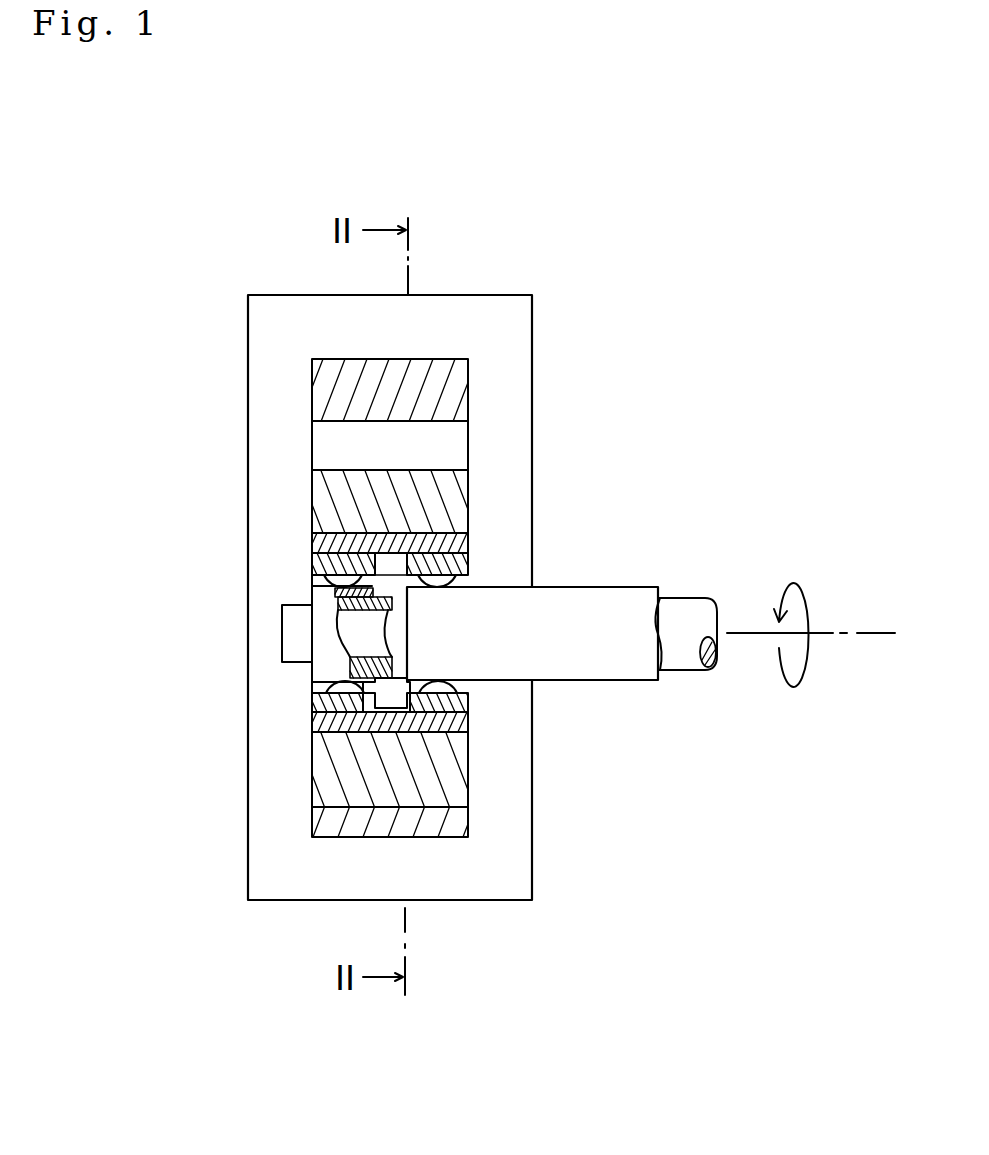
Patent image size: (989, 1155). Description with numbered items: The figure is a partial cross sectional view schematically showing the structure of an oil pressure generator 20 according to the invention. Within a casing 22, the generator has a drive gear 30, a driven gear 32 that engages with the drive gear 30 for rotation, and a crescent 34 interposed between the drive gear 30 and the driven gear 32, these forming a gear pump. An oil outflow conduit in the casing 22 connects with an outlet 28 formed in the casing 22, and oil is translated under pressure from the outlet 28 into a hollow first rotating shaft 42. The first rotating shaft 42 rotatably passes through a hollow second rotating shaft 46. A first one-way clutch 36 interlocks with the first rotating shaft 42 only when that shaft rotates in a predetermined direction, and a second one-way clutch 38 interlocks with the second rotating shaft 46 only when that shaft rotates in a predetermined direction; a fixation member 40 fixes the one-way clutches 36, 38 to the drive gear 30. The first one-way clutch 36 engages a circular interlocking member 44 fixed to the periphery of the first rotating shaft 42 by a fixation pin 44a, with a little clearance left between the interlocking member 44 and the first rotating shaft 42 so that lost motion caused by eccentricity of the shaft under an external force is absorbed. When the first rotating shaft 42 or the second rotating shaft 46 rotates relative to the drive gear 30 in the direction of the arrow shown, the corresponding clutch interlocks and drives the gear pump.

The oil pressure generator 20 is at (607, 292).
The casing 22 is at (293, 295).
The outlet 28 is at (290, 637).
The drive gear 30 is at (462, 503).
The driven gear 32 is at (462, 391).
The crescent 34 is at (462, 447).
The first one-way clutch 36 is at (313, 562).
The second one-way clutch 38 is at (312, 664).
The fixation member 40 is at (311, 540).
The first rotating shaft 42 is at (688, 672).
The interlocking member 44 is at (407, 563).
The fixation pin 44a is at (342, 733).
The second rotating shaft 46 is at (608, 683).